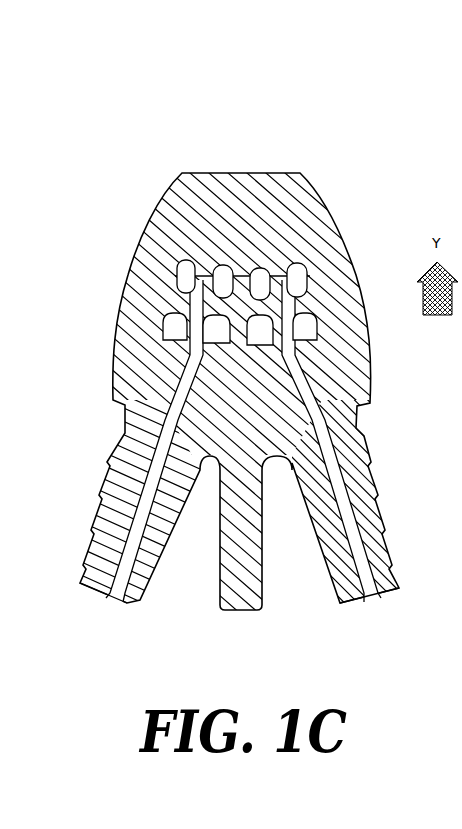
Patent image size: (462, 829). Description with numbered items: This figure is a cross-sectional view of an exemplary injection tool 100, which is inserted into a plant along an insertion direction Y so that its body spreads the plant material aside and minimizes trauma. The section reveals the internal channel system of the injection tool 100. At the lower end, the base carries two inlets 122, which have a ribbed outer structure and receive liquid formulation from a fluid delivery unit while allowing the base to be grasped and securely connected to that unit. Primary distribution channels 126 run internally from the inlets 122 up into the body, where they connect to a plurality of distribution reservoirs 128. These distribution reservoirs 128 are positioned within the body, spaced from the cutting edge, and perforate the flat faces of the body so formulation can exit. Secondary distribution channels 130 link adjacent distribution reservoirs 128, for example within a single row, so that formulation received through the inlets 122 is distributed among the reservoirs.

The injection tool 100 is at (160, 105).
The inlets 122 is at (109, 582).
The primary distribution channels 126 is at (190, 360).
The distribution reservoirs 128 is at (168, 315).
The secondary distribution channels 130 is at (240, 323).